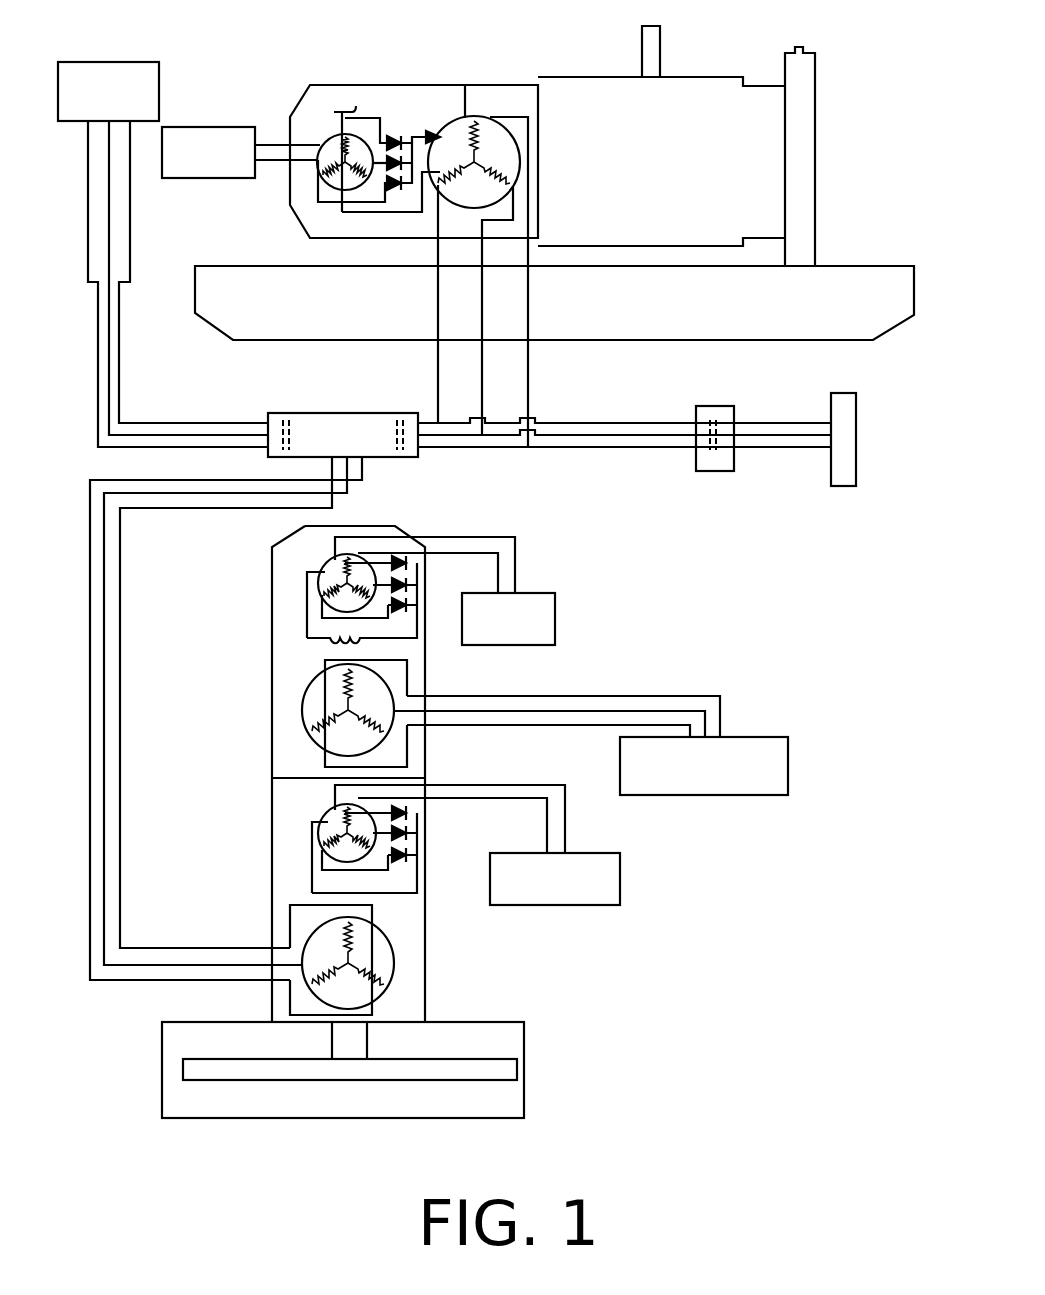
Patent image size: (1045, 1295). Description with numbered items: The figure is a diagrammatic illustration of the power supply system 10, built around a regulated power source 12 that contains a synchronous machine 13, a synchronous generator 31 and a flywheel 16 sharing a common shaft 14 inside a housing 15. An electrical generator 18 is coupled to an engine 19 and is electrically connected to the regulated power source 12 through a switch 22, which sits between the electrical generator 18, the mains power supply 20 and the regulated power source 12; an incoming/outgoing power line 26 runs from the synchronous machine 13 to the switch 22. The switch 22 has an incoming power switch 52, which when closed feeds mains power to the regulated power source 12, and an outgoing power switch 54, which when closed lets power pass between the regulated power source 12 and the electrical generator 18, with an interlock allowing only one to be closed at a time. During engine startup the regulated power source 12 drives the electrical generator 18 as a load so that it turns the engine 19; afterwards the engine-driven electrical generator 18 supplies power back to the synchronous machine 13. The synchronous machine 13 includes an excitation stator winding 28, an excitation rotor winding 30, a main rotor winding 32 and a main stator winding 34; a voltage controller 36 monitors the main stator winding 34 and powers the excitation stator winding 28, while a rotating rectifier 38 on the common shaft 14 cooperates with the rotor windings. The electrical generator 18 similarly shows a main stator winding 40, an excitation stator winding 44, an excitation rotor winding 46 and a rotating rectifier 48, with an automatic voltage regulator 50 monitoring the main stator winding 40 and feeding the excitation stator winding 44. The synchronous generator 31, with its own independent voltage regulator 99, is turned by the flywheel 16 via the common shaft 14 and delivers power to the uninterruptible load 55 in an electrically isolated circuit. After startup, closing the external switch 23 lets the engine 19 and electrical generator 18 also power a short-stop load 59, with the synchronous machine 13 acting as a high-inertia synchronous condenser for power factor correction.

The power supply system 10 is at (570, 525).
The regulated power source 12 is at (690, 660).
The synchronous machine 13 is at (411, 955).
The common shaft 14 is at (318, 1040).
The housing 15 is at (470, 1022).
The flywheel 16 is at (530, 1064).
The electrical generator 18 is at (438, 78).
The engine 19 is at (688, 58).
The mains power supply 20 is at (110, 62).
The switch 22 is at (338, 405).
The external switch 23 is at (714, 471).
The incoming/outgoing power line 26 is at (120, 722).
The excitation stator winding 28 is at (332, 808).
The excitation rotor winding 30 is at (318, 848).
The main rotor winding 32 is at (312, 891).
The synchronous generator 31 is at (440, 673).
The main stator winding 34 is at (395, 950).
The voltage controller 36 is at (622, 900).
The rotating rectifier 38 is at (418, 833).
The main stator winding 40 is at (492, 130).
The excitation stator winding 44 is at (330, 122).
The excitation rotor winding 46 is at (340, 118).
The rotating rectifier 48 is at (393, 135).
The automatic voltage regulator 50 is at (216, 127).
The incoming power switch 52 is at (275, 413).
The outgoing power switch 54 is at (400, 413).
The uninterruptible load 55 is at (735, 795).
The short-stop load 59 is at (845, 486).
The voltage regulator 99 is at (555, 614).